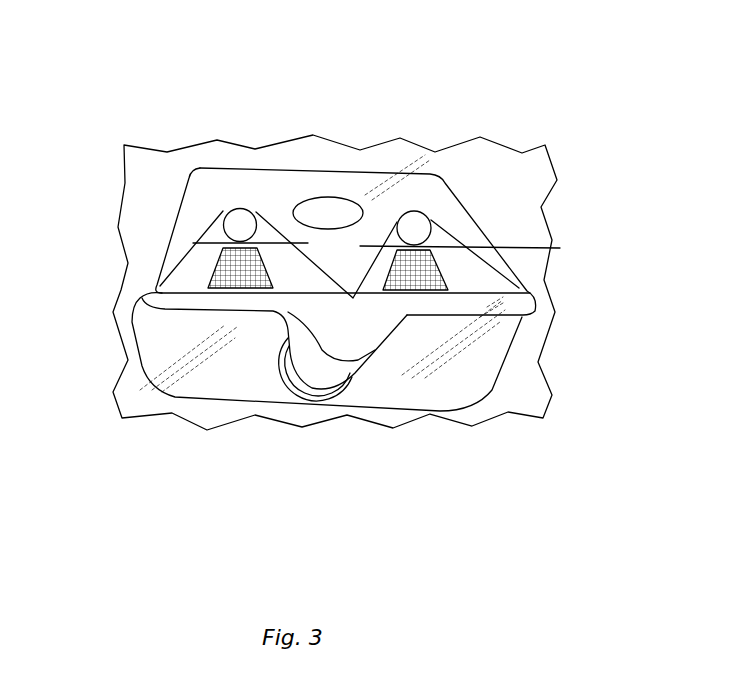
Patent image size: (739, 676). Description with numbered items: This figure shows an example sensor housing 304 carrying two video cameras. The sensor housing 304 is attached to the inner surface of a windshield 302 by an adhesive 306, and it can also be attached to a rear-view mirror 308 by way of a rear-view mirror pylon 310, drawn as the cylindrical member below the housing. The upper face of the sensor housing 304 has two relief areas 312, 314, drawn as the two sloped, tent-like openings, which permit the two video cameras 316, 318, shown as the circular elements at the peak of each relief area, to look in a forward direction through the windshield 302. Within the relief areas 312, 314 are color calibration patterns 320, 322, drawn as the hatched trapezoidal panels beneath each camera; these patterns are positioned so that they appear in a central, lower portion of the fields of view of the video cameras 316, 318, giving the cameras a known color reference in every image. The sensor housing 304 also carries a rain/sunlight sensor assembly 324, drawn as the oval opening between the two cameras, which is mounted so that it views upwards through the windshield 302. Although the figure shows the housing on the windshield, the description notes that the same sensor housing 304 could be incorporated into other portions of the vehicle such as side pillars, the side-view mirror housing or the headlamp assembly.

The windshield 302 is at (257, 170).
The sensor housing 304 is at (505, 145).
The adhesive 306 is at (352, 262).
The rear-view mirror 308 is at (454, 410).
The rear-view mirror pylon 310 is at (352, 377).
The relief area 312 is at (213, 250).
The relief area 314 is at (478, 259).
The video camera 316 is at (430, 215).
The video camera 318 is at (235, 207).
The color calibration pattern 320 is at (210, 268).
The color calibration pattern 322 is at (440, 270).
The rain/sunlight sensor assembly 324 is at (345, 197).